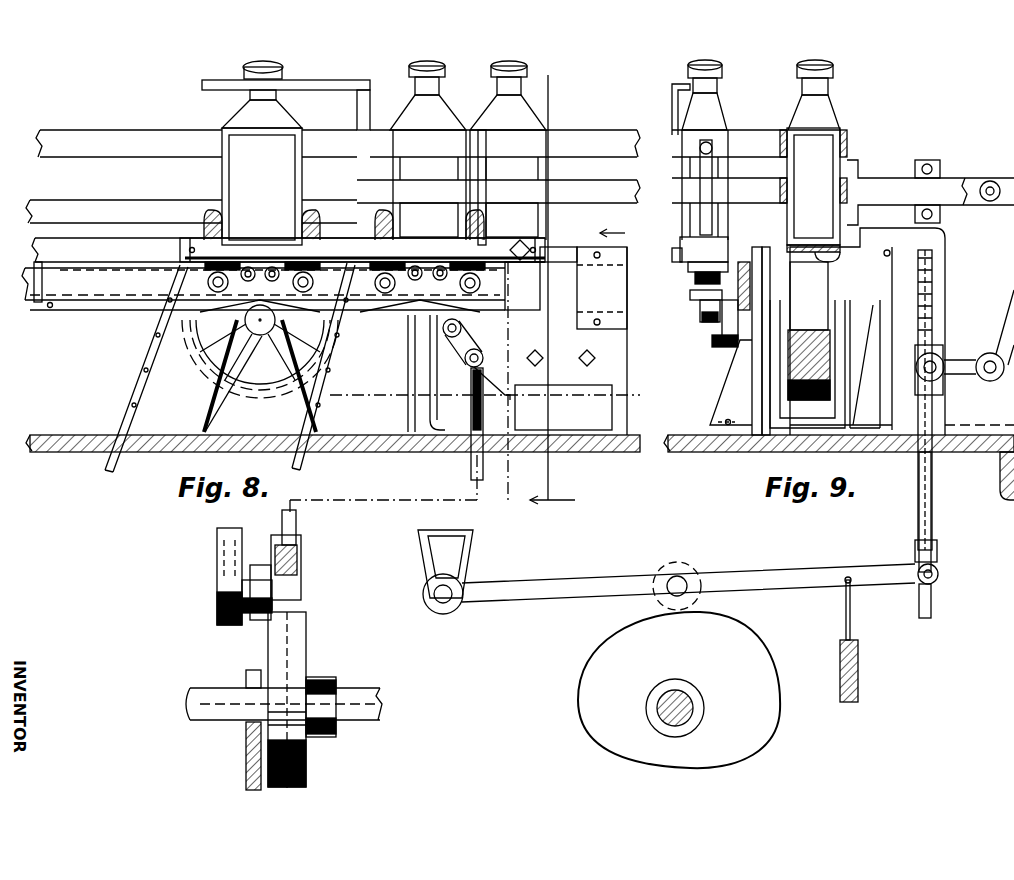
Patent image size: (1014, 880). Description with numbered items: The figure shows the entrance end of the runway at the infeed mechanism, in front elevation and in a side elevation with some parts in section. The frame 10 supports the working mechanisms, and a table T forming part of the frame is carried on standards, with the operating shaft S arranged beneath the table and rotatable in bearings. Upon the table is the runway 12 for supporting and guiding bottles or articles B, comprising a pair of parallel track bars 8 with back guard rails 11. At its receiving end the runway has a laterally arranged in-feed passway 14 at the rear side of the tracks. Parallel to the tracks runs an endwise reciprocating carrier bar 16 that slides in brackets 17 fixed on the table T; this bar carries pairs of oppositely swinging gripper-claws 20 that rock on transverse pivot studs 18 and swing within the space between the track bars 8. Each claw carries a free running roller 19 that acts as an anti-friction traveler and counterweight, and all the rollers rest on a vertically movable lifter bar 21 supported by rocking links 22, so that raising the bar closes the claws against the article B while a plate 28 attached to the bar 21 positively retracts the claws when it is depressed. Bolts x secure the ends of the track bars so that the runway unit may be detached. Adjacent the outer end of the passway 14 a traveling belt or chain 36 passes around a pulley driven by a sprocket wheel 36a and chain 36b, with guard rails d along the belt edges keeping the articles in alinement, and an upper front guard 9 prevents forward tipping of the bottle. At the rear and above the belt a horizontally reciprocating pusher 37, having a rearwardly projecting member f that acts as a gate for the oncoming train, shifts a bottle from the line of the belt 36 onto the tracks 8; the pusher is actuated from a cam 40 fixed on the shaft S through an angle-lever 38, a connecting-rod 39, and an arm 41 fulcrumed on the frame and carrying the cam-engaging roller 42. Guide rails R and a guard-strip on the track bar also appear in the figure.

In FIG. 8, the track bars 8 is at (35, 250).
In FIG. 9, the track bars 8 is at (685, 250).
In FIG. 8, the upper front guard 9 is at (388, 292).
In FIG. 9, the upper front guard 9 is at (672, 90).
In FIG. 8, the frame 10 is at (485, 341).
In FIG. 9, the frame 10 is at (902, 325).
In FIG. 8, the back guard rails 11 is at (155, 140).
In FIG. 9, the runway 12 is at (666, 251).
In FIG. 9, the in-feed passway 14 is at (745, 250).
In FIG. 8, the reciprocating bar 16 is at (273, 381).
In FIG. 9, the reciprocating bar 16 is at (752, 283).
In FIG. 8, the guides or brackets 17 is at (583, 288).
In FIG. 9, the guides or brackets 17 is at (732, 382).
In FIG. 8, the pivot studs 18 is at (415, 300).
In FIG. 9, the roller 19 is at (696, 300).
In FIG. 8, the gripper-claws 20 is at (215, 222).
In FIG. 8, the lifter member 21 is at (38, 302).
In FIG. 9, the lifter member 21 is at (700, 310).
In FIG. 8, the rocking links 22 is at (500, 330).
In FIG. 9, the rocking links 22 is at (730, 335).
In FIG. 8, the plate 28 is at (112, 295).
In FIG. 9, the plate 28 is at (700, 284).
In FIG. 8, the traveling belt or chain 36 is at (458, 340).
In FIG. 9, the traveling belt or chain 36 is at (835, 258).
In FIG. 9, the sprocket wheel 36a is at (935, 282).
In FIG. 8, the chain 36b is at (140, 400).
In FIG. 9, the chain 36b is at (918, 600).
In FIG. 9, the pusher 37 is at (895, 175).
In FIG. 9, the angle-lever 38 is at (1008, 288).
In FIG. 8, the connecting-rod 39 is at (296, 522).
In FIG. 9, the connecting-rod 39 is at (933, 462).
In FIG. 8, the cam 40 is at (300, 655).
In FIG. 9, the cam 40 is at (757, 672).
In FIG. 8, the arm 41 is at (217, 627).
In FIG. 9, the arm 41 is at (688, 570).
In FIG. 8, the cam-engaging roller 42 is at (295, 584).
In FIG. 9, the cam-engaging roller 42 is at (679, 566).
In FIG. 8, the bottles or articles B is at (384, 153).
In FIG. 9, the bottles or articles B is at (815, 148).
In FIG. 8, the rail R is at (498, 167).
In FIG. 9, the rail R is at (674, 144).
In FIG. 8, the guard rails d is at (608, 140).
In FIG. 9, the guard rails d is at (847, 140).
In FIG. 9, the rearwardly projecting member f is at (885, 185).
In FIG. 8, the bolts x is at (567, 360).
In FIG. 8, the table T is at (333, 454).
In FIG. 9, the table T is at (839, 467).
In FIG. 8, the operating shaft S is at (350, 700).
In FIG. 9, the operating shaft S is at (676, 700).